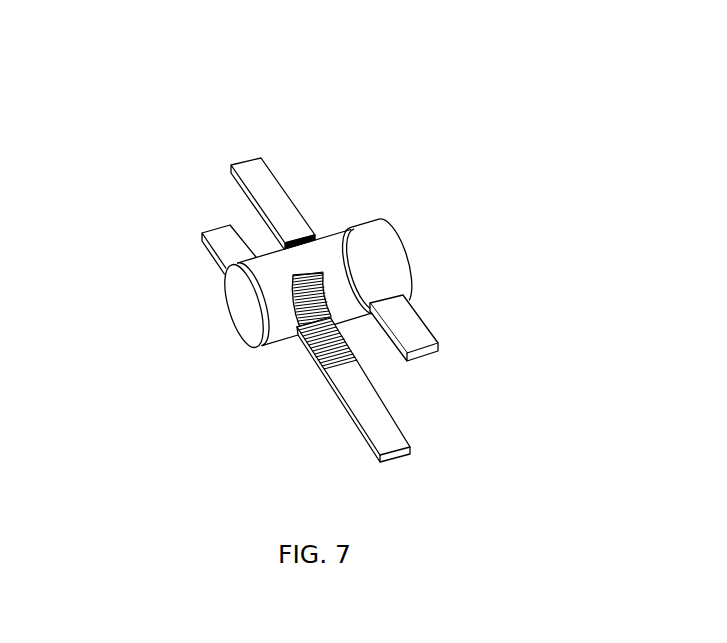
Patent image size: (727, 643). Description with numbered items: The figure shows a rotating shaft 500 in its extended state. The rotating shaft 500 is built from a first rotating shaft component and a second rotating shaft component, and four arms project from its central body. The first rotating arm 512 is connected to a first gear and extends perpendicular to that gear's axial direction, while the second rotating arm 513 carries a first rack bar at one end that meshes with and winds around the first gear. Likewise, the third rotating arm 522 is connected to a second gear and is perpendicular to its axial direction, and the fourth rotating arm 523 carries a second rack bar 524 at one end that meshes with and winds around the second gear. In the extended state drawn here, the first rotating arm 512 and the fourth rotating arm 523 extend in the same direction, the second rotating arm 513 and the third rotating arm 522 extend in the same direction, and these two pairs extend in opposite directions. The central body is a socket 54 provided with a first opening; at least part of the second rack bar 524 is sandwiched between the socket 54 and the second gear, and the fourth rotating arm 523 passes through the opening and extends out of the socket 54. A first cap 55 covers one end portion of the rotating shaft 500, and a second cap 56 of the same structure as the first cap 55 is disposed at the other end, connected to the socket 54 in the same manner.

The rotating shaft 500 is at (299, 53).
The socket 54 is at (345, 258).
The first cap 55 is at (392, 265).
The second cap 56 is at (245, 300).
The first rotating arm 512 is at (405, 323).
The second rotating arm 513 is at (288, 210).
The third rotating arm 522 is at (235, 252).
The fourth rotating arm 523 is at (352, 395).
The second rack bar 524 is at (300, 338).